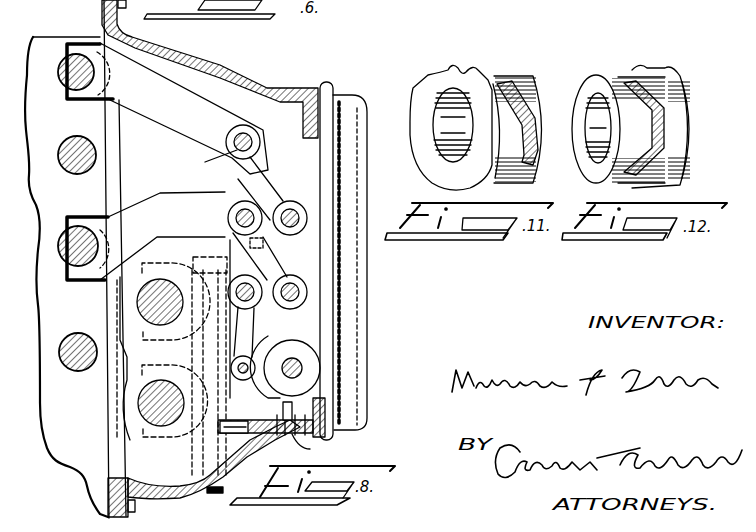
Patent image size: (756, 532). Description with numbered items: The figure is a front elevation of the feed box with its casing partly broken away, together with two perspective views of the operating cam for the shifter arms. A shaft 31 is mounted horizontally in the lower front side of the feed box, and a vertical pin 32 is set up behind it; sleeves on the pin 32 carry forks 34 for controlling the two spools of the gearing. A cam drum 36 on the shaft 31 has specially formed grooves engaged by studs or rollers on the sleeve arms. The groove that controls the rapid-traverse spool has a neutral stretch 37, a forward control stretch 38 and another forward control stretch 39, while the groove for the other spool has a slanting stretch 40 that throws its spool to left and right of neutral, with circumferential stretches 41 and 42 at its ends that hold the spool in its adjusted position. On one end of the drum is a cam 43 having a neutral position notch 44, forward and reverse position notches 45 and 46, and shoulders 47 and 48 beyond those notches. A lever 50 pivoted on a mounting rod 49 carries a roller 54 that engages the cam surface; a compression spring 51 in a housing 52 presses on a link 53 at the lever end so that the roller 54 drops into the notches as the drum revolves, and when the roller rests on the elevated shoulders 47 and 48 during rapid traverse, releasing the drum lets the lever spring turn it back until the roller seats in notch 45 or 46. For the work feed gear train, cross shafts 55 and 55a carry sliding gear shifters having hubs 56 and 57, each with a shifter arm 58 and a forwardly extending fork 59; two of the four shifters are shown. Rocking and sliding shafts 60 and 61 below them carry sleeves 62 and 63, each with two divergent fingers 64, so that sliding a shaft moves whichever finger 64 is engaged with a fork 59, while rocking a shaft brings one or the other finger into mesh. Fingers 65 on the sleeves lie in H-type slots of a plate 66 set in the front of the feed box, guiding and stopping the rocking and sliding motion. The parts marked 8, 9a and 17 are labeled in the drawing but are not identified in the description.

In FIG. 8, the frame 8 is at (235, 72).
In FIG. 8, the cylinder bore 9a is at (140, 300).
In FIG. 8, the cylinder 17 is at (143, 418).
In FIG. 8, the shaft 31 is at (305, 369).
In FIG. 8, the vertical pin 32 is at (173, 356).
In FIG. 8, the forks 34 is at (103, 380).
In FIG. 8, the cam drum 36 is at (300, 337).
In FIG. 11, the cam drum 36 is at (513, 172).
In FIG. 12, the cam drum 36 is at (590, 95).
In FIG. 12, the neutral stretch 37 is at (657, 128).
In FIG. 12, the forward control stretch 38 is at (655, 102).
In FIG. 12, the forward control stretch 39 is at (665, 162).
In FIG. 11, the slanting stretch 40 is at (533, 121).
In FIG. 11, the circumferential stretch 41 is at (503, 82).
In FIG. 11, the circumferential stretch 42 is at (538, 156).
In FIG. 8, the cam 43 is at (297, 397).
In FIG. 11, the cam 43 is at (467, 68).
In FIG. 12, the cam 43 is at (670, 70).
In FIG. 11, the neutral position notch 44 is at (450, 66).
In FIG. 12, the neutral position notch 44 is at (648, 68).
In FIG. 11, the forward position notch 45 is at (440, 75).
In FIG. 11, the reverse position notch 46 is at (435, 108).
In FIG. 11, the shoulder 47 is at (420, 80).
In FIG. 11, the shoulder 48 is at (487, 83).
In FIG. 8, the mounting rod 49 is at (303, 317).
In FIG. 8, the lever 50 is at (247, 327).
In FIG. 8, the spring 51 is at (310, 447).
In FIG. 8, the housing 52 is at (265, 433).
In FIG. 8, the link 53 is at (218, 433).
In FIG. 8, the roller 54 is at (243, 357).
In FIG. 8, the cross shaft 55 is at (207, 162).
In FIG. 8, the cross shaft 55a is at (233, 203).
In FIG. 8, the hub 56 is at (253, 135).
In FIG. 8, the hub 57 is at (228, 212).
In FIG. 8, the shifter arm 58 is at (168, 112).
In FIG. 8, the forks 59 is at (260, 161).
In FIG. 8, the rocking and sliding shaft 60 is at (284, 203).
In FIG. 8, the rocking and sliding shaft 61 is at (278, 305).
In FIG. 8, the sleeve 62 is at (303, 203).
In FIG. 8, the sleeve 63 is at (300, 270).
In FIG. 8, the divergent fingers 64 is at (268, 190).
In FIG. 8, the fingers 65 is at (388, 208).
In FIG. 8, the plate 66 is at (368, 310).